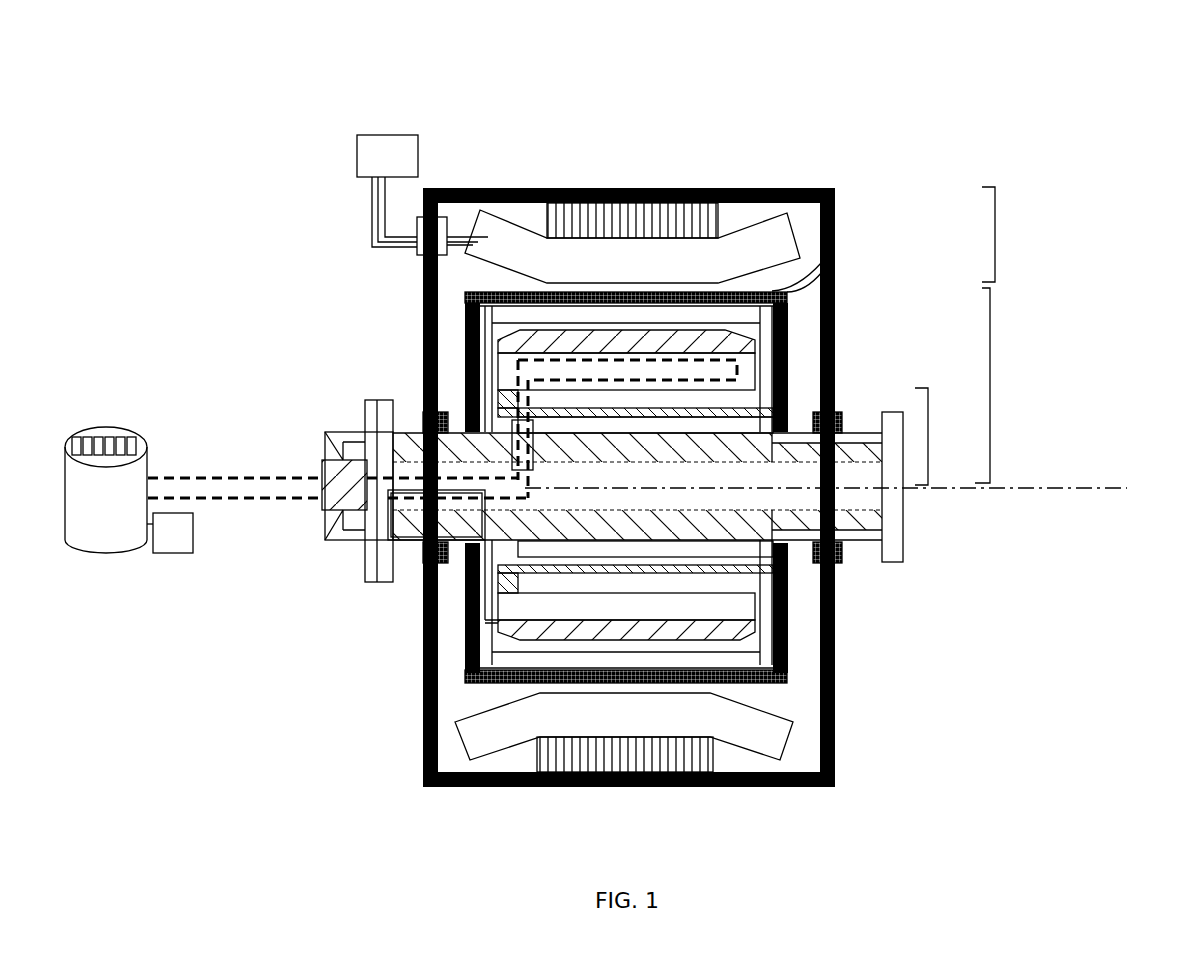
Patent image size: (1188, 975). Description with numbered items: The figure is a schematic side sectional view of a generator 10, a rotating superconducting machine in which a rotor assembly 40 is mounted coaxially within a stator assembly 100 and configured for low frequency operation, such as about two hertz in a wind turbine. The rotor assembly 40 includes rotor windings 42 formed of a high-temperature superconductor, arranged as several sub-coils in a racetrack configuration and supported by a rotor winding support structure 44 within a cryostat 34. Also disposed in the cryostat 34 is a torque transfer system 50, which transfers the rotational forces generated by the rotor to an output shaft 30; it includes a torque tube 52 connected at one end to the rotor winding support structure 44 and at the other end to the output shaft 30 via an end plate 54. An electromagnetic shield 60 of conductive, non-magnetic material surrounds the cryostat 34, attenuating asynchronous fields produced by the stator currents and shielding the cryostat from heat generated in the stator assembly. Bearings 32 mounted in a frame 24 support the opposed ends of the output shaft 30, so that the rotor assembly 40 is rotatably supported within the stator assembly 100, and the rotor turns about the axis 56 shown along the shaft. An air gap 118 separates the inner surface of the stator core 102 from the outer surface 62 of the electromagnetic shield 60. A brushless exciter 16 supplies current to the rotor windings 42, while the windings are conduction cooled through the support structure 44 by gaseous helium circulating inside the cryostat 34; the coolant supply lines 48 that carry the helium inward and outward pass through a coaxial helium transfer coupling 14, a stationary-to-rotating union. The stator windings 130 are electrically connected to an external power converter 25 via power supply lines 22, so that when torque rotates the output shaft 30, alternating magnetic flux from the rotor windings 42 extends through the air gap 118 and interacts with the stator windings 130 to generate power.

The generator 10 is at (597, 40).
The coaxial helium transfer coupling 14 is at (322, 503).
The brushless exciter 16 is at (375, 568).
The power supply lines 22 is at (378, 210).
The frame 24 is at (836, 751).
The external power converter 25 is at (378, 148).
The output shaft 30 is at (867, 525).
The bearings 32 is at (840, 413).
The cryostat 34 is at (463, 650).
The rotor assembly 40 is at (990, 383).
The rotor windings 42 is at (788, 676).
The rotor winding support structure 44 is at (725, 634).
The coolant supply lines 48 is at (210, 480).
The torque transfer system 50 is at (928, 440).
The torque tube 52 is at (745, 610).
The end plate 54 is at (748, 573).
The rotational axis 56 is at (1072, 486).
The electromagnetic shield 60 is at (822, 289).
The outer surface 62 is at (824, 263).
The stator assembly 100 is at (995, 237).
The stator core 102 is at (693, 190).
The air gap 118 is at (547, 283).
The stator windings 130 is at (785, 242).